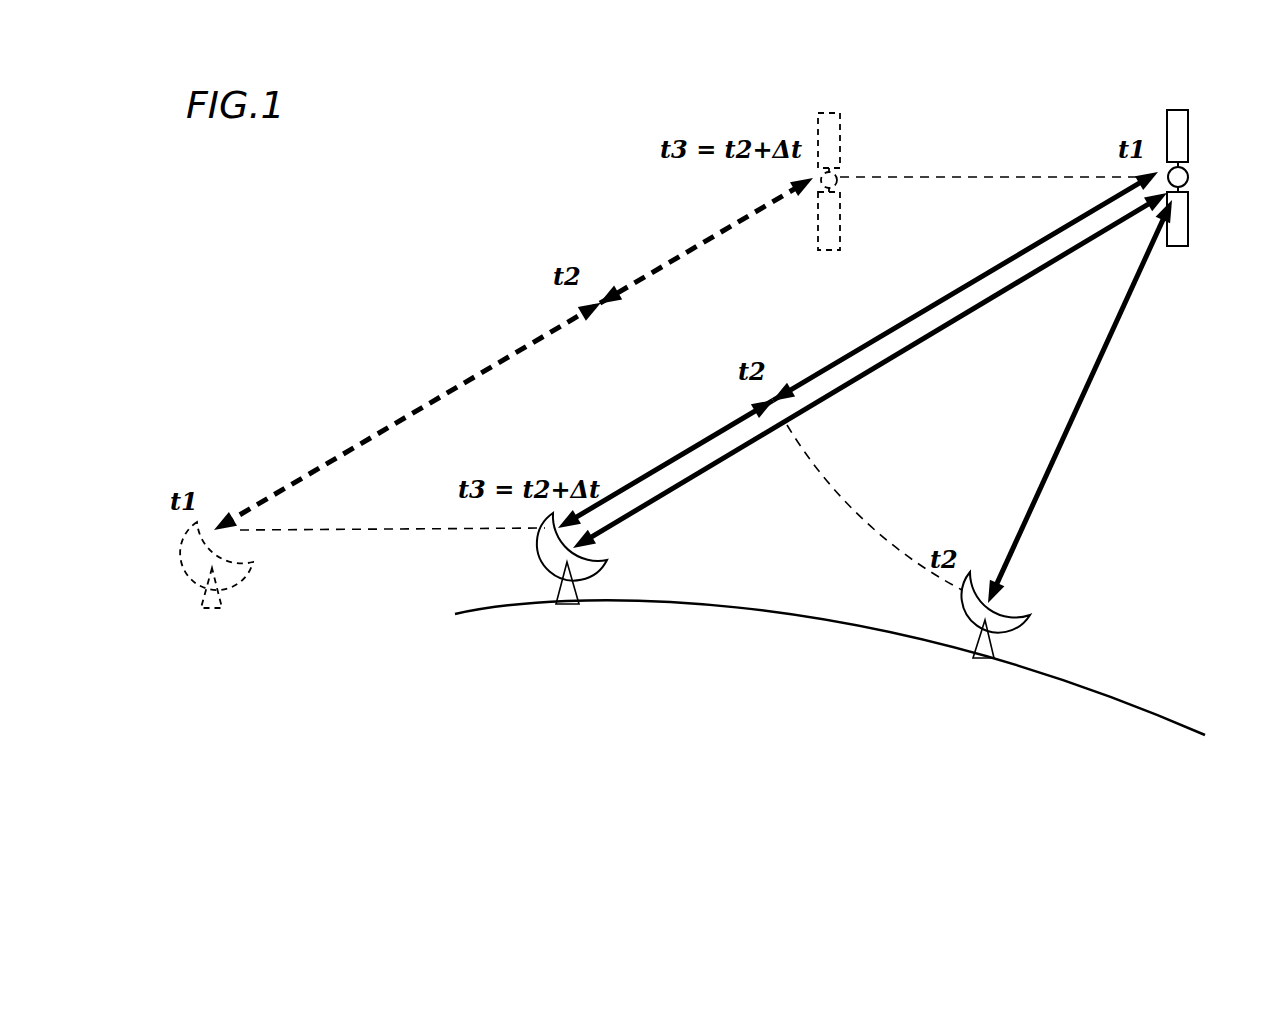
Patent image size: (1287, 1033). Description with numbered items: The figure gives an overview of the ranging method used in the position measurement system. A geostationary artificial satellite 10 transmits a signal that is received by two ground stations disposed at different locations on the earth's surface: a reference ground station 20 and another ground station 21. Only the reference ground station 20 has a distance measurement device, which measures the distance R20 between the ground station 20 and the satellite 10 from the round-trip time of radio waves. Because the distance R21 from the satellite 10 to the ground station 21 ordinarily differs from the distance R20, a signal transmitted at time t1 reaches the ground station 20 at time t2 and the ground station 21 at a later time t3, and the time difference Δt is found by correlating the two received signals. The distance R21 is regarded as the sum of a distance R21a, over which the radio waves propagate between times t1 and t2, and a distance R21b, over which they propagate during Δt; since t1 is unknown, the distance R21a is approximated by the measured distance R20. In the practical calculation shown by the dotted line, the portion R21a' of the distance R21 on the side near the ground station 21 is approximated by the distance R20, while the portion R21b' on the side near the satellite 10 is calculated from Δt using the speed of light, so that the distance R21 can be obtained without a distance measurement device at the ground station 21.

The geostationary artificial satellite 10 is at (1188, 137).
The reference ground station 20 is at (1012, 613).
The ground station 21 is at (200, 560).
The distance between reference ground station and satellite R20 is at (1082, 410).
The distance between ground station and satellite R21 is at (868, 377).
The first component distance R21a is at (965, 286).
The second component distance R21b is at (666, 464).
The portion near the ground station R21a' is at (407, 416).
The portion near the satellite R21b' is at (706, 241).